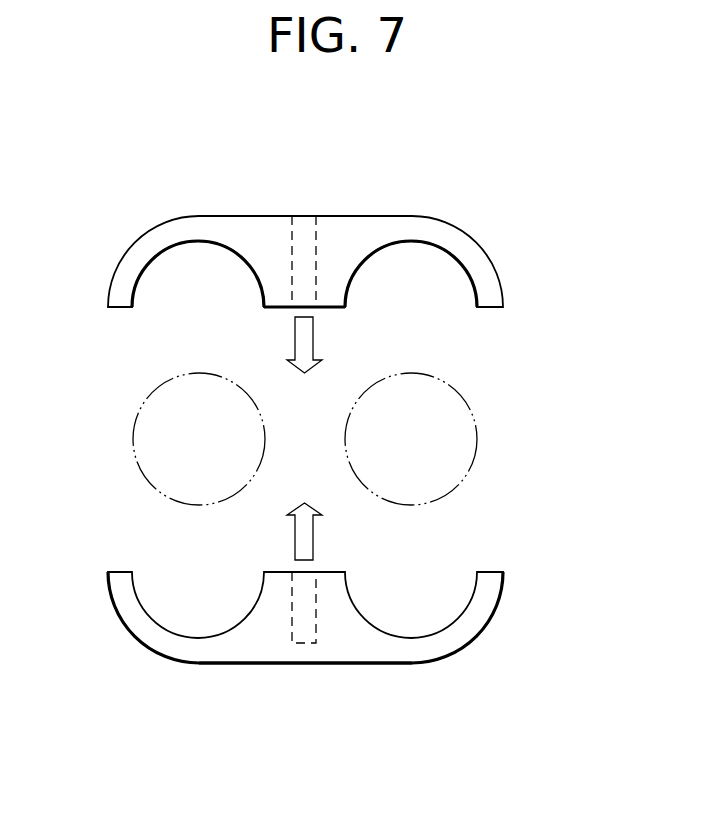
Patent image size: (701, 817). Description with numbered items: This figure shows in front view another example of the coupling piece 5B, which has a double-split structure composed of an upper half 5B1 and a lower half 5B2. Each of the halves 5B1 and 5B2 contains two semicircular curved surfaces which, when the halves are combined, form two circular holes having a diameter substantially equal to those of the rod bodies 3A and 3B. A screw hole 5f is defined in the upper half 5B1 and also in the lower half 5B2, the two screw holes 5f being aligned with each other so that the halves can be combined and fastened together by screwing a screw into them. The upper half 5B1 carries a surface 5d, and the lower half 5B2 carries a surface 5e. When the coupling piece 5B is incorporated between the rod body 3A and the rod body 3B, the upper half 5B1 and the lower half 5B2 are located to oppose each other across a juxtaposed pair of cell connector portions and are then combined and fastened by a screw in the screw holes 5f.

The coupling piece 5B is at (372, 437).
The upper half 5B1 is at (314, 219).
The lower half 5B2 is at (325, 657).
The top surface of upper half 5d is at (357, 216).
The bottom surface of lower half 5e is at (292, 664).
The screw hole 5f is at (302, 220).
The rod body 3A is at (466, 418).
The rod body 3B is at (148, 428).